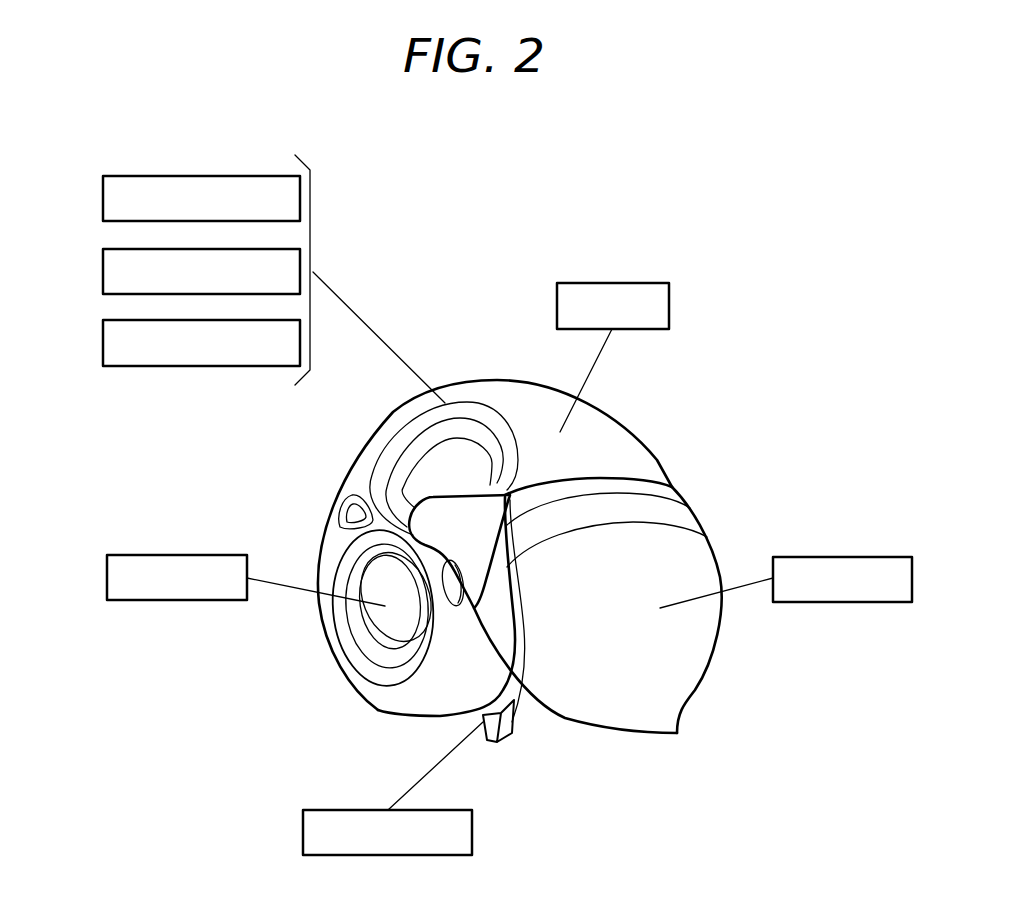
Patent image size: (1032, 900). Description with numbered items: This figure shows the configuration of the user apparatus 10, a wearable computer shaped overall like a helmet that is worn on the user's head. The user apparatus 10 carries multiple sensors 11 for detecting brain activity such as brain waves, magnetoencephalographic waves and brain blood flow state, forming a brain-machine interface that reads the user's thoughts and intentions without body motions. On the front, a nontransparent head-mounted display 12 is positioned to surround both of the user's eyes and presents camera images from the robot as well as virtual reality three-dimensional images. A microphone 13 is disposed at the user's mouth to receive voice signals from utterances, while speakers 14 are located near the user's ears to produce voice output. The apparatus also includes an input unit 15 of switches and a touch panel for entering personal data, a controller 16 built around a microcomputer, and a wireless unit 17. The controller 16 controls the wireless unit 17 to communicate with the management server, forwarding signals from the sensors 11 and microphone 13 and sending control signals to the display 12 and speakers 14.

The user apparatus 10 is at (780, 292).
The sensors 11 is at (656, 283).
The display 12 is at (880, 557).
The microphone 13 is at (472, 832).
The speakers 14 is at (225, 555).
The input unit 15 is at (103, 197).
The controller 16 is at (103, 270).
The wireless unit 17 is at (103, 343).